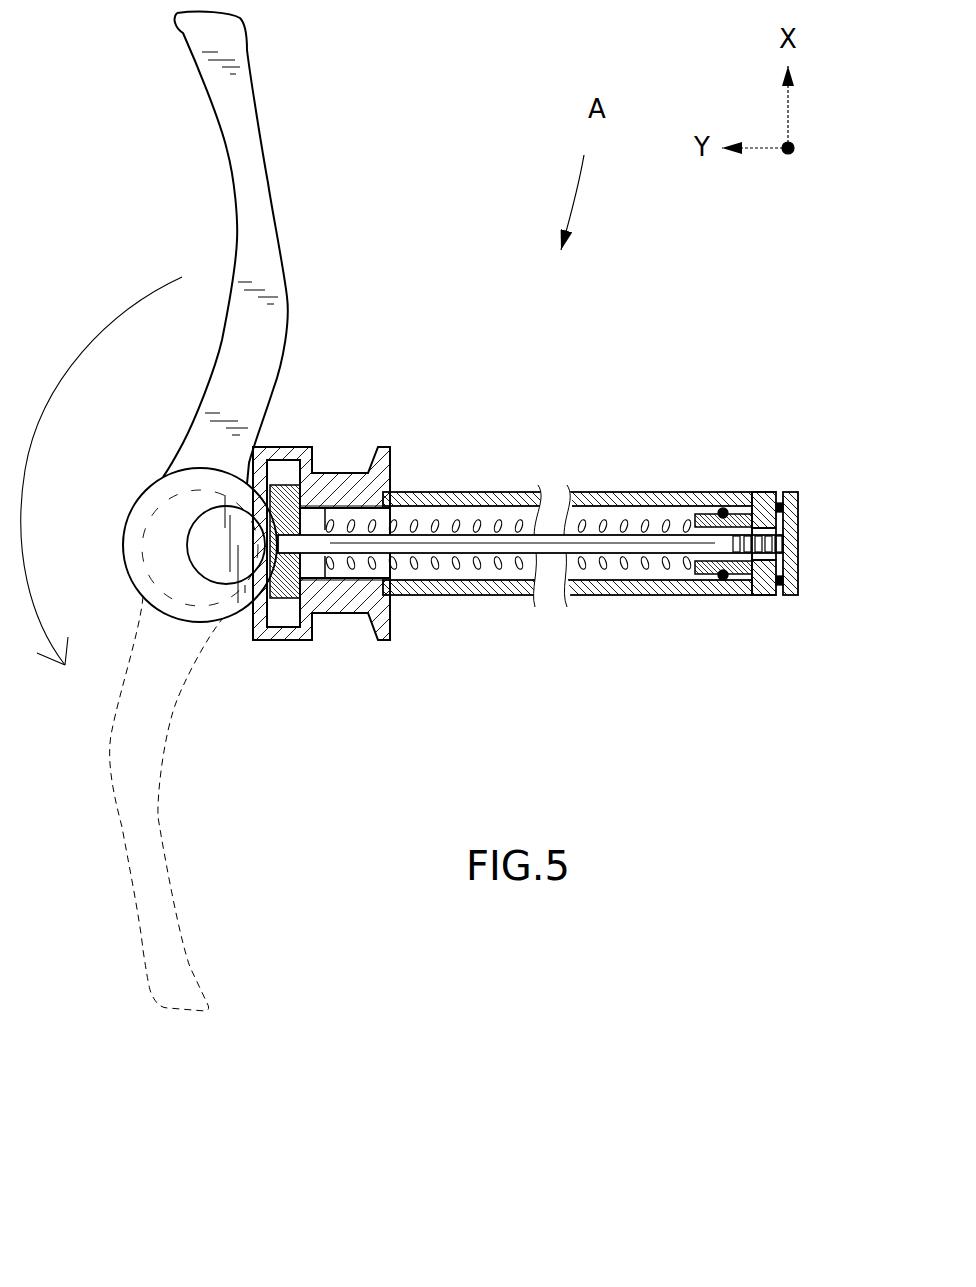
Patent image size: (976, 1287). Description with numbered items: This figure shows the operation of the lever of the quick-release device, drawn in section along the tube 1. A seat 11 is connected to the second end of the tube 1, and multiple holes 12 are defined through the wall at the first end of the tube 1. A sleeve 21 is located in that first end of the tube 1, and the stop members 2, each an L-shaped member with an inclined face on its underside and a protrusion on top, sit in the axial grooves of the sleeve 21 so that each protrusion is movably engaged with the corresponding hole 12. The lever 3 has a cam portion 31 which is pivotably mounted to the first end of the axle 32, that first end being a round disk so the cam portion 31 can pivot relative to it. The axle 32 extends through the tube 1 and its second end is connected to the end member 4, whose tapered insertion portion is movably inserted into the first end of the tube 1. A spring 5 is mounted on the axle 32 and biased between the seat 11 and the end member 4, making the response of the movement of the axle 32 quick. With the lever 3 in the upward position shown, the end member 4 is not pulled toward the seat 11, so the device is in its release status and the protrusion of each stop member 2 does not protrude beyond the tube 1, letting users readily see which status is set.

The tube 1 is at (480, 492).
The seat 11 is at (345, 487).
The holes 12 is at (757, 492).
The stop members 2 is at (762, 492).
The sleeve 21 is at (690, 575).
The lever 3 is at (253, 85).
The cam portion 31 is at (153, 462).
The axle 32 is at (466, 545).
The end member 4 is at (798, 595).
The spring 5 is at (598, 575).